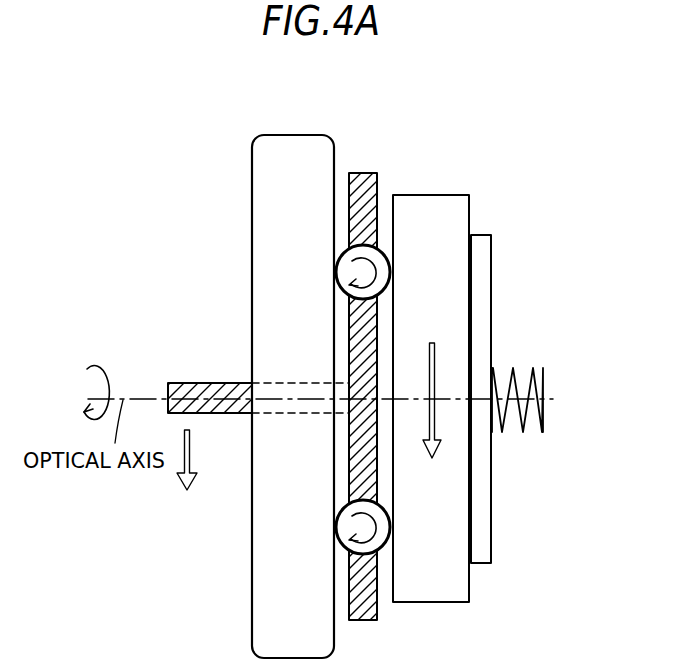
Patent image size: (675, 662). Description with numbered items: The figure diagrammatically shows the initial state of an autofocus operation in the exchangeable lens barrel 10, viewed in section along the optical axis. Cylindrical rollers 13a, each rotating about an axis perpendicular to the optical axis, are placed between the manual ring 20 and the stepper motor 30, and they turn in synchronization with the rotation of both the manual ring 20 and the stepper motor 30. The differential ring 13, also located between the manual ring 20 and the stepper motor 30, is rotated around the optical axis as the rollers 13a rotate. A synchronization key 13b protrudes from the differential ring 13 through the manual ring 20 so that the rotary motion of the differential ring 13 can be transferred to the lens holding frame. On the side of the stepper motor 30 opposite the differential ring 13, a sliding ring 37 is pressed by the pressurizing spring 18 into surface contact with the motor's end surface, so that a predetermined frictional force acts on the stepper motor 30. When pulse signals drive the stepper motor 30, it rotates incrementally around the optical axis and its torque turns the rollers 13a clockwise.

The exchangeable lens barrel 10 is at (138, 123).
The manual ring 20 is at (278, 202).
The differential ring 13 is at (377, 186).
The cylindrical rollers 13a is at (363, 528).
The synchronization key 13b is at (188, 385).
The stepper motor 30 is at (440, 293).
The sliding ring 37 is at (480, 485).
The pressurizing spring 18 is at (545, 417).